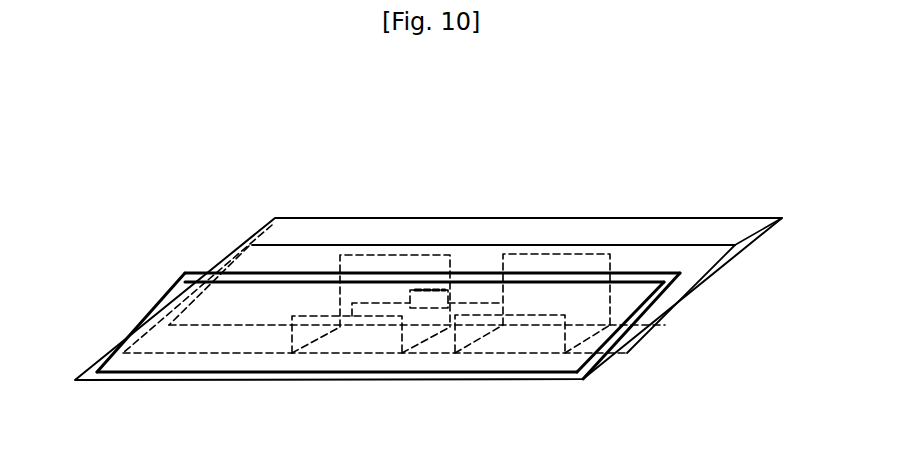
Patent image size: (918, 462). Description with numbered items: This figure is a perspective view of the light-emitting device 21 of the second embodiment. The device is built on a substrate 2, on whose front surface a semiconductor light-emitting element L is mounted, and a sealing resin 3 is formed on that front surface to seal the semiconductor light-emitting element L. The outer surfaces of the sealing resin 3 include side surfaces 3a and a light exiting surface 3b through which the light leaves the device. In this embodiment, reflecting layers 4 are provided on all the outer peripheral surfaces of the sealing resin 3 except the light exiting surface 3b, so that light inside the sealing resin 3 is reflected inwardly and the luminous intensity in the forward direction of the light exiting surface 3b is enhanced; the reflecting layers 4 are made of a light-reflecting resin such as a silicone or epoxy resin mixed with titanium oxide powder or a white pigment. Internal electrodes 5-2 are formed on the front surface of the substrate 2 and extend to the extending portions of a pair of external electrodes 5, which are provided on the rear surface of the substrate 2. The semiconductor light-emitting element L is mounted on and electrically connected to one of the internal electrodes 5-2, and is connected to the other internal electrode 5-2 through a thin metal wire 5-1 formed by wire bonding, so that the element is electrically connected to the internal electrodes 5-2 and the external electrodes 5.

The light-emitting device 21 is at (684, 166).
The substrate 2 is at (700, 234).
The sealing resin 3 is at (388, 372).
The side surfaces 3a is at (147, 300).
The light exiting surface 3b is at (347, 366).
The reflecting layers 4 is at (288, 271).
The external electrodes 5 is at (398, 258).
The thin metal wire 5-1 is at (369, 300).
The internal electrodes 5-2 is at (343, 328).
The semiconductor light-emitting element L is at (448, 290).